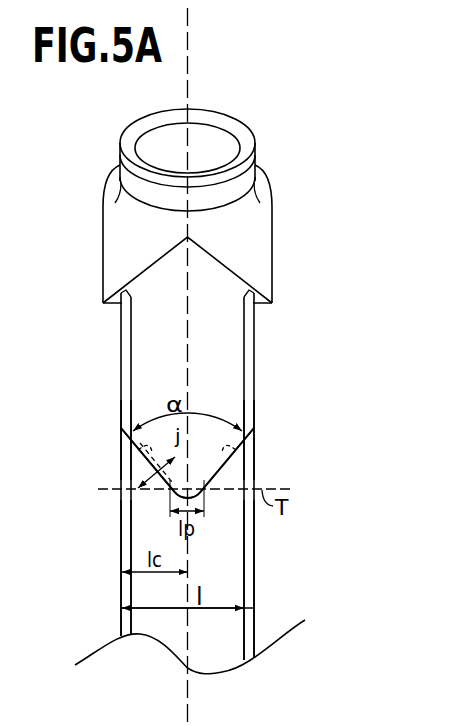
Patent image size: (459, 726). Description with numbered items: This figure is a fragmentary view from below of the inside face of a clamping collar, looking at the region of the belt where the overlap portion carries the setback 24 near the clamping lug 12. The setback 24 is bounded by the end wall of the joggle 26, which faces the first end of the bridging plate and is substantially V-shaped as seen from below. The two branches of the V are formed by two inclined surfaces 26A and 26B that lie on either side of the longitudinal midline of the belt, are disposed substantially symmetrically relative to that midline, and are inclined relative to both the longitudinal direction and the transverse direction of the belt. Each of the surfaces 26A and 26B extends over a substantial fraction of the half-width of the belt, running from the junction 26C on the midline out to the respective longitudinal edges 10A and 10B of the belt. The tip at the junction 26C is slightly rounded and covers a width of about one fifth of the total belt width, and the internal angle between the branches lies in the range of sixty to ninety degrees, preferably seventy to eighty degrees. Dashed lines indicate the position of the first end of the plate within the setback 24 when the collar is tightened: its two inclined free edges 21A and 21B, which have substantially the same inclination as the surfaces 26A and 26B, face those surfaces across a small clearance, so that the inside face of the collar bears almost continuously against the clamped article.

The clamping lug 12 is at (255, 240).
The setback 24 is at (223, 335).
The joggle 26 is at (201, 437).
The inclined surface 26A is at (240, 443).
The inclined surface 26B is at (136, 443).
The junction 26C is at (208, 494).
The inclined free edge 21A is at (250, 427).
The inclined free edge 21B is at (125, 426).
The longitudinal edge of the belt 10A is at (254, 560).
The longitudinal edge of the belt 10B is at (121, 512).